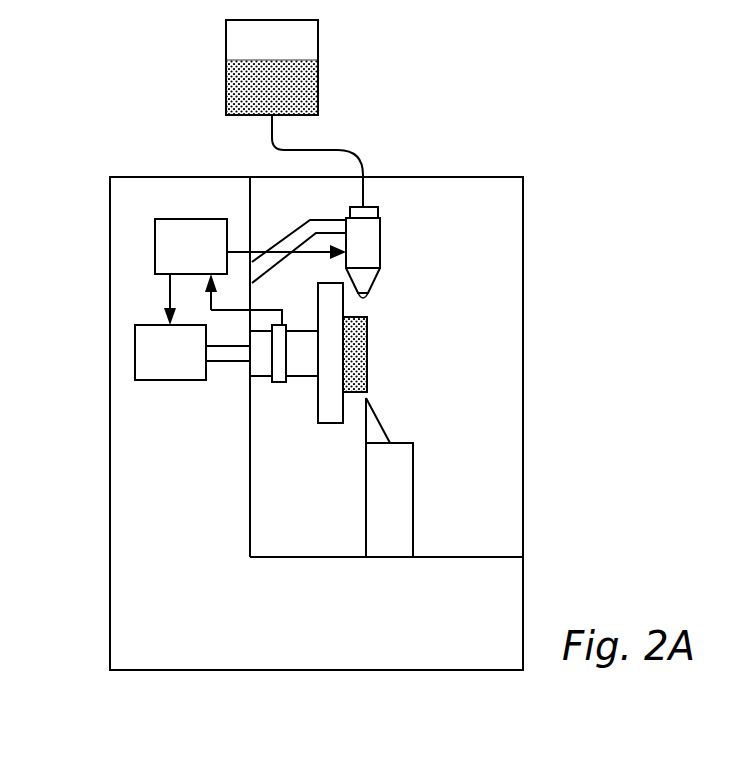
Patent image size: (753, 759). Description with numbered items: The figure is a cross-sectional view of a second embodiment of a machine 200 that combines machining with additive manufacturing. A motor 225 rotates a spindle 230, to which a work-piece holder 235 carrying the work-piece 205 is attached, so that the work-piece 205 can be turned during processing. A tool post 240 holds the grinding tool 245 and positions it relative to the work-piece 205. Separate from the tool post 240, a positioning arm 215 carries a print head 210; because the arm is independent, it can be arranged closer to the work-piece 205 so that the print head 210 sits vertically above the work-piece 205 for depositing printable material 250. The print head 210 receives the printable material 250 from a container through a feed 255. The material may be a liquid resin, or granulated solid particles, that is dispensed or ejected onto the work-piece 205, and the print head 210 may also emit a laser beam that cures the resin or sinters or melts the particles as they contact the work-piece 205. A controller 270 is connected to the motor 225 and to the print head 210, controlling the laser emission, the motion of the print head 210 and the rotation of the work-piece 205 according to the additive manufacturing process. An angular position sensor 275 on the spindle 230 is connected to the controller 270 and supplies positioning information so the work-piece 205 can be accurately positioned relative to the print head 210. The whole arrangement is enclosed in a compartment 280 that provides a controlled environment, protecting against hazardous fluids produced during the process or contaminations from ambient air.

The machine 200 is at (566, 77).
The work-piece 205 is at (362, 350).
The print head 210 is at (370, 247).
The positioning arm 215 is at (295, 236).
The motor 225 is at (160, 352).
The spindle 230 is at (232, 354).
The work-piece holder 235 is at (331, 419).
The tool post 240 is at (394, 480).
The grinding tool 245 is at (382, 420).
The printable material 250 is at (245, 80).
The feed 255 is at (350, 153).
The controller 270 is at (173, 247).
The angular position sensor 275 is at (278, 383).
The compartment 280 is at (523, 222).